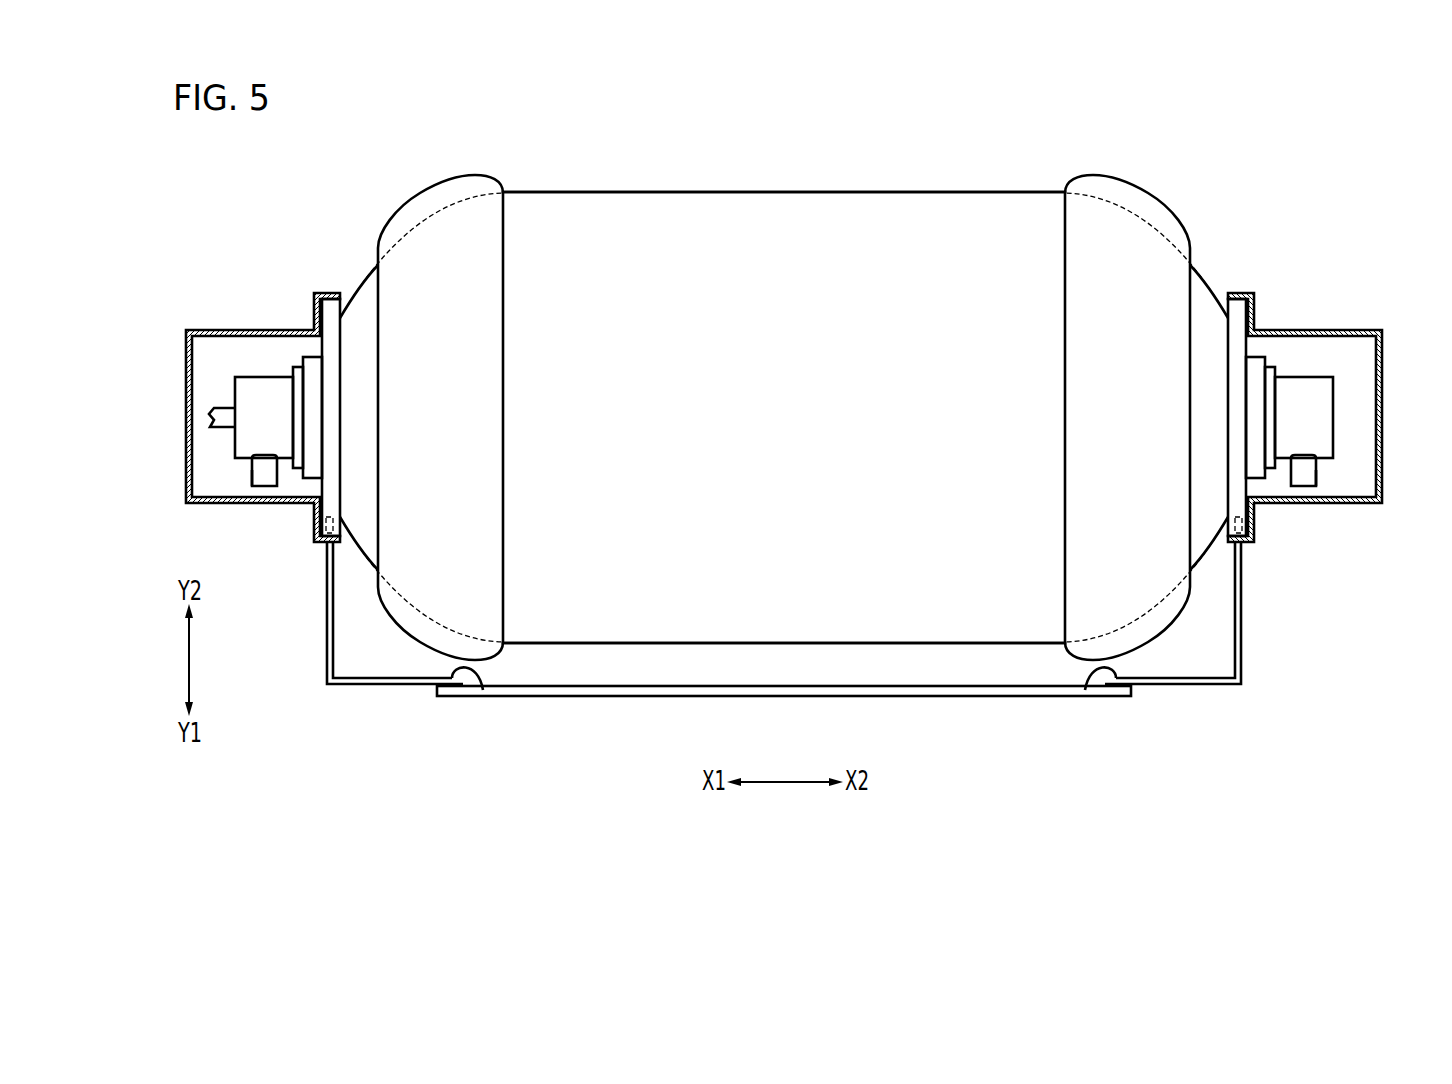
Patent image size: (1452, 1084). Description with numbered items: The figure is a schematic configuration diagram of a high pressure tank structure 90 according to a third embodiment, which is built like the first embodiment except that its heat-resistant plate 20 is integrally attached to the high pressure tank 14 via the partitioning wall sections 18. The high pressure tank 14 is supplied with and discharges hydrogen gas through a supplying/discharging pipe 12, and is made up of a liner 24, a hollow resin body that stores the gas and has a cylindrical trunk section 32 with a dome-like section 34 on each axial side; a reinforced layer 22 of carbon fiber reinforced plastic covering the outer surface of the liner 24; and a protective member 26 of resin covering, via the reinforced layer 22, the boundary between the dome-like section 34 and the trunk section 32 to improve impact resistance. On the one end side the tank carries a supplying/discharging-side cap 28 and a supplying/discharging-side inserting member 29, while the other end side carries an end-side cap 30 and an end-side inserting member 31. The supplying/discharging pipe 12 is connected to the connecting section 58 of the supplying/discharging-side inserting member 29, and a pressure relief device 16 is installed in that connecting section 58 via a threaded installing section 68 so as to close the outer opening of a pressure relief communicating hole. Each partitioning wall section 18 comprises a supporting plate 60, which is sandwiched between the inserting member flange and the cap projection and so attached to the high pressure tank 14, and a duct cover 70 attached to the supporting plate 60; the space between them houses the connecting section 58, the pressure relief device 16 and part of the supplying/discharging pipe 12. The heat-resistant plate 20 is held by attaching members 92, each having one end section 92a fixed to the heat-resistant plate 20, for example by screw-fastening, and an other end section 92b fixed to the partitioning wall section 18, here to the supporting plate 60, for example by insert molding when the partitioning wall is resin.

The high pressure tank structure 90 is at (1288, 132).
The high pressure tank 14 is at (938, 173).
The reinforced layer 22 is at (640, 191).
The liner 24 is at (705, 216).
The cylindrical trunk section 32 is at (797, 200).
The protective member 26 is at (466, 182).
The dome-like section 34 is at (420, 250).
The partitioning wall section 18 is at (343, 245).
The duct cover 70 is at (280, 329).
The supporting plate 60 is at (330, 312).
The supplying/discharging-side cap 28 is at (313, 457).
The end-side cap 30 is at (1256, 457).
The supplying/discharging-side inserting member 29 is at (259, 365).
The end-side inserting member 31 is at (1310, 365).
The connecting section 58 is at (245, 441).
The supplying/discharging pipe 12 is at (219, 407).
The pressure relief device 16 is at (263, 465).
The installing section 68 is at (256, 473).
The other end section 92b is at (333, 530).
The attaching member 92 is at (405, 686).
The one end section 92a is at (484, 692).
The heat-resistant plate 20 is at (927, 697).